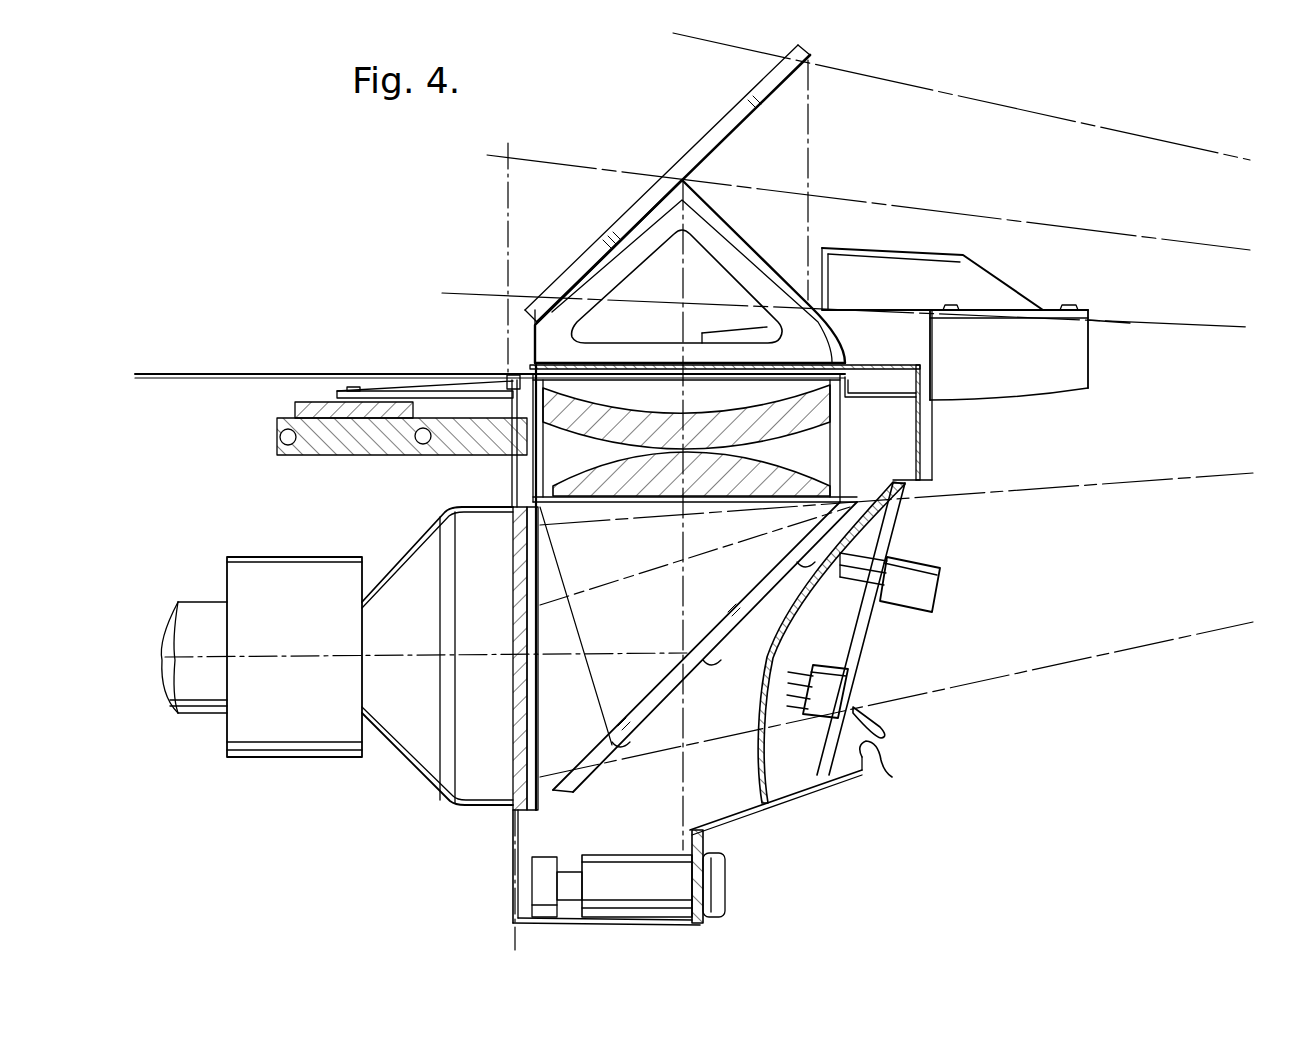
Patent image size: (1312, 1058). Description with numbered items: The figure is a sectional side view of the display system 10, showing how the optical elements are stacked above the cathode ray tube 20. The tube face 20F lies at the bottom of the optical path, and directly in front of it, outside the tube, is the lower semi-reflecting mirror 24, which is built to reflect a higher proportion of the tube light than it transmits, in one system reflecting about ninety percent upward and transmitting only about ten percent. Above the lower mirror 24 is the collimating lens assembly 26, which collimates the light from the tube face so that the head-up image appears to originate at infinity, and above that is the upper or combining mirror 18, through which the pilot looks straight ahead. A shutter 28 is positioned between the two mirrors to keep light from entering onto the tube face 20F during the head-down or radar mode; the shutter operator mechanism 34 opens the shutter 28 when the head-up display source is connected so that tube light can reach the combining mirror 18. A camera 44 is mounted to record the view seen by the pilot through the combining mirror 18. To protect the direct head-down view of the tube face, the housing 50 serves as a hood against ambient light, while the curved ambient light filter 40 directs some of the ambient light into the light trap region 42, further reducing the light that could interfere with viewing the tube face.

The display system 10 is at (640, 164).
The combining mirror 18 is at (804, 66).
The camera 44 is at (987, 282).
The shutter 28 is at (828, 403).
The collimating lens assembly 26 is at (815, 477).
The shutter operator mechanism 34 is at (277, 455).
The housing 50 is at (895, 513).
The curved ambient light filter 40 is at (842, 536).
The lower semi-reflecting mirror 24 is at (722, 624).
The tube face 20F is at (612, 727).
The cathode ray tube 20 is at (394, 773).
The light trap region 42 is at (887, 751).